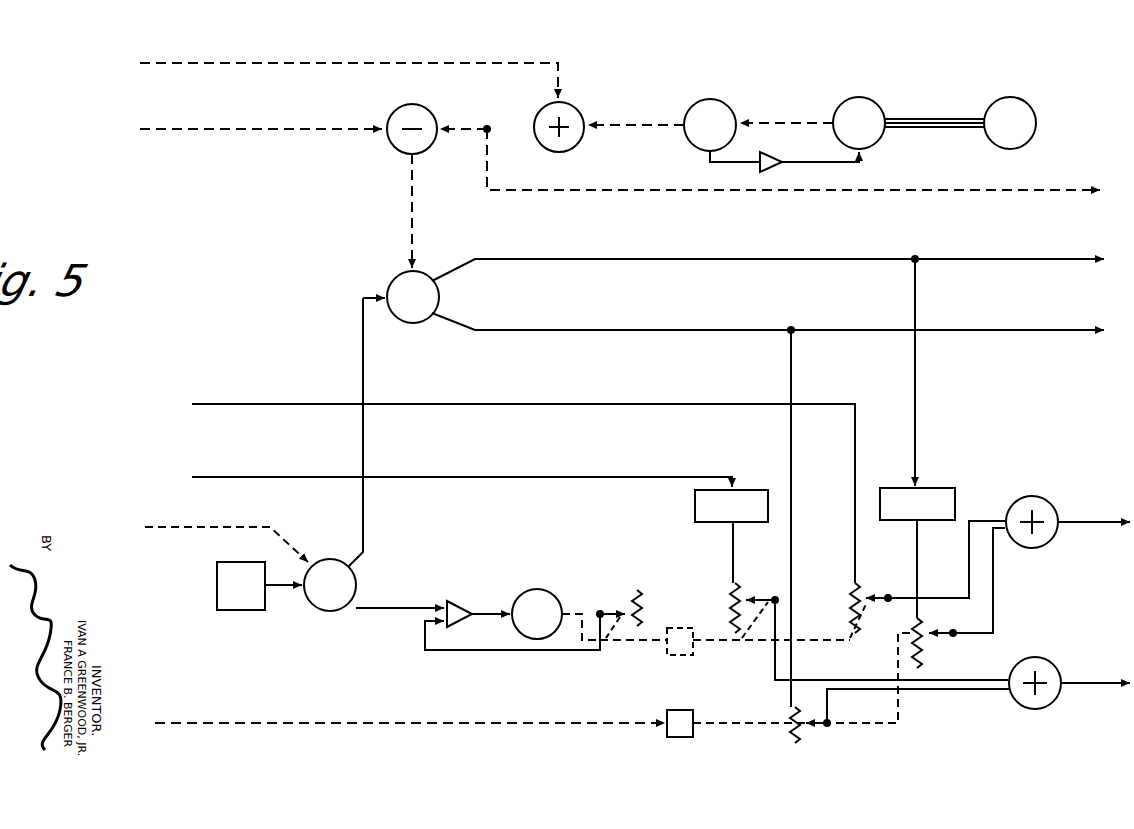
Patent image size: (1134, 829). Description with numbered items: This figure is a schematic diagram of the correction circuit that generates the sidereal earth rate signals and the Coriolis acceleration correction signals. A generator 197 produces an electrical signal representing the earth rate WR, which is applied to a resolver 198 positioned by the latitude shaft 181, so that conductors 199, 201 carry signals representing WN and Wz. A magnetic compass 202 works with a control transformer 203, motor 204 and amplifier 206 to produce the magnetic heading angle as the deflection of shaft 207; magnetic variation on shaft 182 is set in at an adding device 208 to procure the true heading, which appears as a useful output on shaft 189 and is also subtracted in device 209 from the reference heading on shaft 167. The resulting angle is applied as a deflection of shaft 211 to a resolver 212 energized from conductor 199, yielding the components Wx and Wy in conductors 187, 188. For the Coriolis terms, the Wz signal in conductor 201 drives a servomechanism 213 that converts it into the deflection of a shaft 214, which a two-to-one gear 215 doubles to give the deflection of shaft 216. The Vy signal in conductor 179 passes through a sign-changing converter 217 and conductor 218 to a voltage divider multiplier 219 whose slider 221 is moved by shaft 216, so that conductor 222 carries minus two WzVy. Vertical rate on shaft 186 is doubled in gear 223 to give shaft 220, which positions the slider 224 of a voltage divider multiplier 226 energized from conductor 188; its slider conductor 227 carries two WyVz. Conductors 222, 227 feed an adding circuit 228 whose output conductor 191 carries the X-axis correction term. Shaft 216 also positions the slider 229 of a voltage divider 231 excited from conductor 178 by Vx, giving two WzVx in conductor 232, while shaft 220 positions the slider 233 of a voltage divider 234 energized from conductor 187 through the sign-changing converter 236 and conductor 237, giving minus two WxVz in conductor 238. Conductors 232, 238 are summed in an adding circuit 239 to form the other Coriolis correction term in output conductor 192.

The shaft 167 is at (284, 132).
The conductor 178 is at (286, 406).
The conductor 179 is at (286, 478).
The shaft 181 is at (300, 528).
The shaft 182 is at (304, 62).
The shaft 186 is at (372, 722).
The conductor 187 is at (586, 258).
The conductor 188 is at (586, 328).
The shaft 189 is at (1024, 190).
The conductor 191 is at (1092, 682).
The output conductor 192 is at (1090, 520).
The generator 197 is at (217, 577).
The resolver 198 is at (318, 606).
The conductor 199 is at (364, 554).
The conductor 201 is at (350, 608).
The magnetic compass 202 is at (1032, 110).
The control transformer 203 is at (874, 104).
The motor 204 is at (732, 100).
The amplifier 206 is at (782, 164).
The shaft 207 is at (662, 126).
The adding device 208 is at (548, 142).
The subtracting device 209 is at (420, 107).
The shaft 211 is at (412, 214).
The resolver 212 is at (396, 270).
The servomechanism 213 is at (514, 619).
The shaft 214 is at (604, 644).
The 2:1 gear 215 is at (686, 614).
The shaft 216 is at (698, 642).
The converter 217 is at (695, 508).
The conductor 218 is at (733, 554).
The voltage divider multiplier 219 is at (732, 588).
The shaft 220 is at (770, 723).
The slider 221 is at (760, 594).
The conductor 222 is at (775, 668).
The gear 223 is at (686, 737).
The slider 224 is at (816, 726).
The voltage divider multiplier 226 is at (790, 742).
The slider conductor 227 is at (954, 690).
The adding circuit 228 is at (1012, 697).
The slider 229 is at (876, 604).
The voltage divider 231 is at (855, 584).
The conductor 232 is at (969, 590).
The potentiometer 233 is at (932, 640).
The voltage divider 234 is at (922, 626).
The sign-changing converter 236 is at (900, 488).
The conductor 237 is at (917, 556).
The conductor 238 is at (992, 622).
The adding circuit 239 is at (1011, 506).